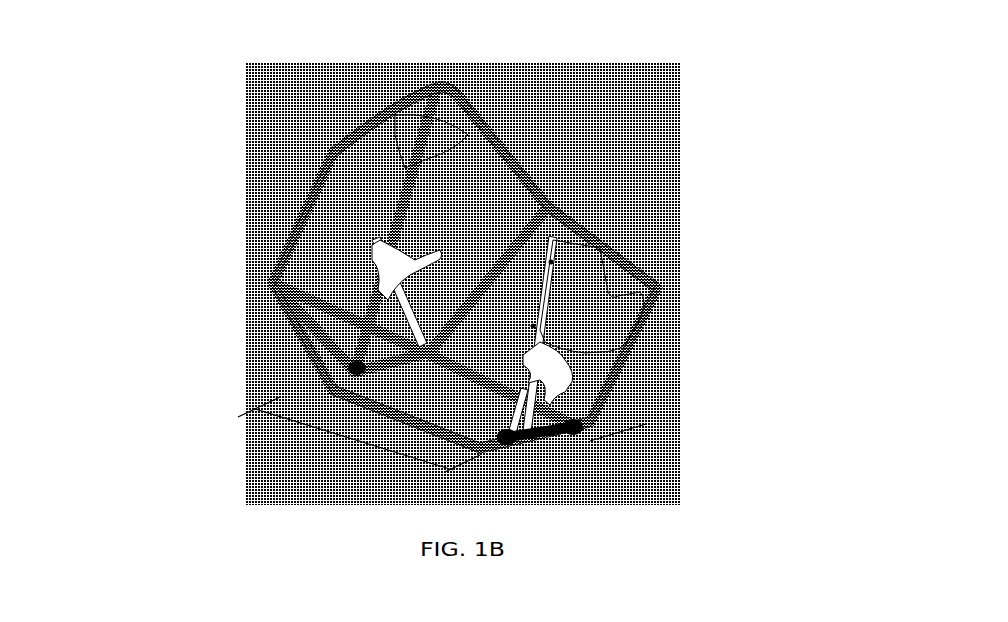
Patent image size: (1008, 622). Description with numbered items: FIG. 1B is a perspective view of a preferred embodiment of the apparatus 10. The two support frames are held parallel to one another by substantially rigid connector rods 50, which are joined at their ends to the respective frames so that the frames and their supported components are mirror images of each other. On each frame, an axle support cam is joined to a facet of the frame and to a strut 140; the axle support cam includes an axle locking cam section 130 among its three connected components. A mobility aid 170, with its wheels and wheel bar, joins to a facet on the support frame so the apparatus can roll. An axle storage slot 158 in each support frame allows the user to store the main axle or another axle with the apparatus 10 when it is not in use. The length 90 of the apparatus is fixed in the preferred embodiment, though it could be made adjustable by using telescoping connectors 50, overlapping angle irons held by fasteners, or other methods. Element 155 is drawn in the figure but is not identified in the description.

The apparatus 10 is at (276, 114).
The connector rods 50 is at (273, 282).
The strut 140 is at (296, 371).
The length 90 is at (442, 434).
The axle locking cam section 130 is at (557, 370).
The axle storage slot 158 is at (527, 434).
The vertex joint 155 is at (552, 200).
The mobility aid 170 is at (466, 90).